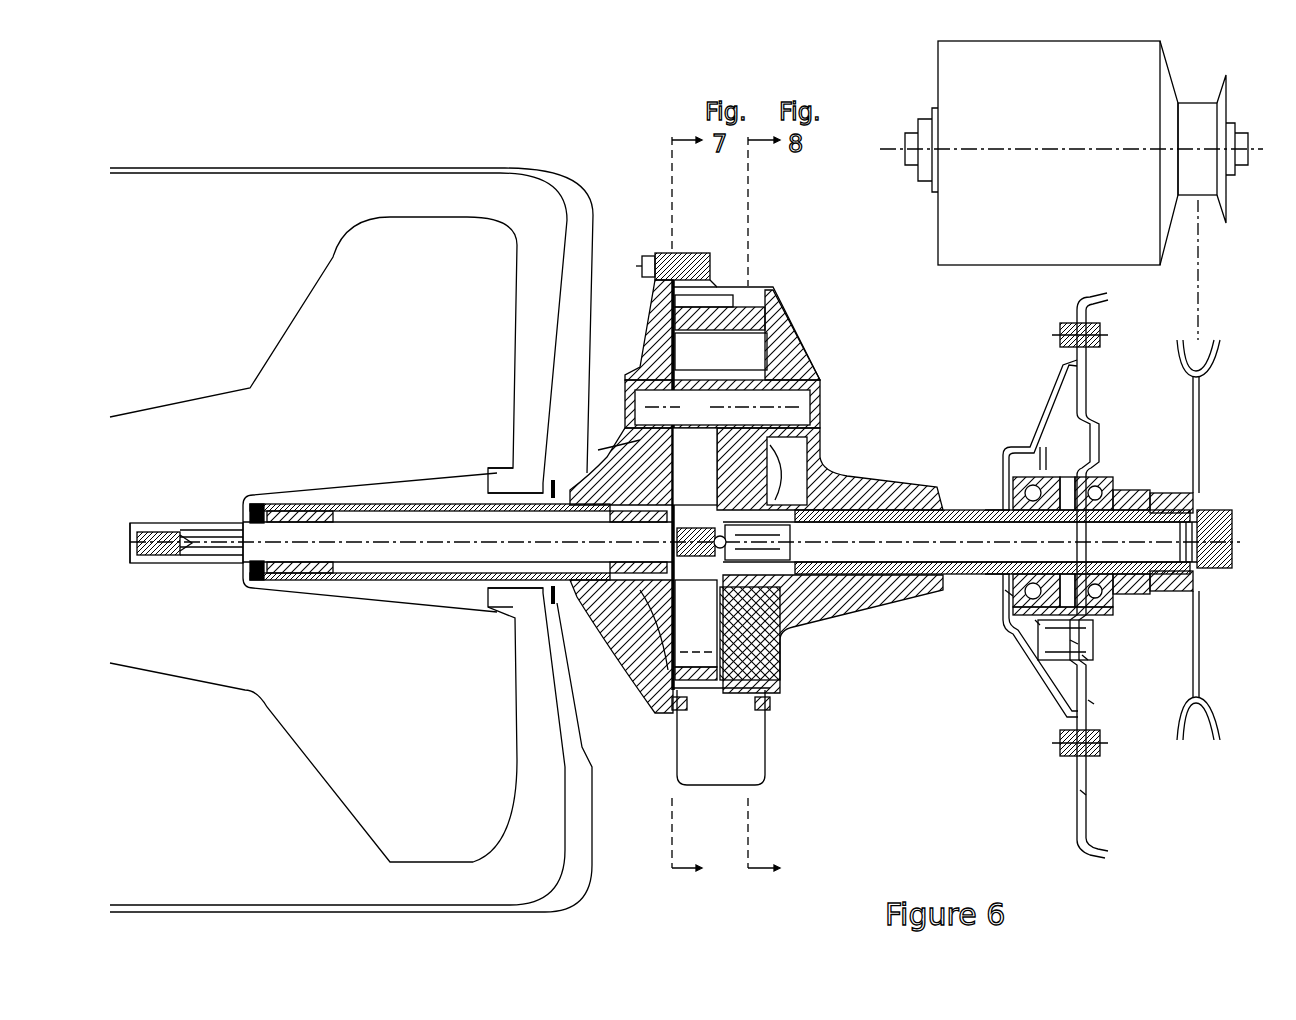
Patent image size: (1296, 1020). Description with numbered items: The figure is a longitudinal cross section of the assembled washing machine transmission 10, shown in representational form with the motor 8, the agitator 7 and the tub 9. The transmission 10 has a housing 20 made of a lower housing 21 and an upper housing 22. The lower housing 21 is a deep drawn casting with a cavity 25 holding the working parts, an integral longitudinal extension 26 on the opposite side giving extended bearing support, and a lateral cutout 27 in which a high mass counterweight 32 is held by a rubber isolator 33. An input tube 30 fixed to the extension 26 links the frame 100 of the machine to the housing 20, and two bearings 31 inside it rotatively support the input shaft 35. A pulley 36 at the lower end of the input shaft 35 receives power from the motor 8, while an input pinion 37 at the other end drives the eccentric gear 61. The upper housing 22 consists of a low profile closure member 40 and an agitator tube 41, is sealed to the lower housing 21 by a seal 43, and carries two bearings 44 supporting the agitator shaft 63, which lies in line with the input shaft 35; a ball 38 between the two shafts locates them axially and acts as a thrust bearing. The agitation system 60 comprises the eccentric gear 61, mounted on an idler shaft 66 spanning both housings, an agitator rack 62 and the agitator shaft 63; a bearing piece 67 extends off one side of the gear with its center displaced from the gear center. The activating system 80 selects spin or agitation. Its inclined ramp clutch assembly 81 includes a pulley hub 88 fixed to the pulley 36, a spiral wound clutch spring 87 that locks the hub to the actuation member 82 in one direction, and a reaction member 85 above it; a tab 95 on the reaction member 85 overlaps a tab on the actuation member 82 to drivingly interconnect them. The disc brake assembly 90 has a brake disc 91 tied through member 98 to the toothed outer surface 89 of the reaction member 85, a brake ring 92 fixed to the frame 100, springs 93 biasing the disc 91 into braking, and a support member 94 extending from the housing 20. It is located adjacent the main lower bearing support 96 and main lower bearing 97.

The agitator 7 is at (515, 302).
The motor 8 is at (1056, 224).
The tub 9 is at (543, 187).
The transmission 10 is at (804, 223).
The housing 20 is at (795, 297).
The lower housing 21 is at (765, 645).
The upper housing 22 is at (633, 667).
The cavity 25 is at (718, 298).
The longitudinal extension 26 is at (862, 490).
The lateral cutout 27 is at (778, 706).
The input tube 30 is at (985, 505).
The bearings 31 is at (818, 522).
The counterweight 32 is at (731, 757).
The rubber isolator 33 is at (676, 715).
The input shaft 35 is at (974, 555).
The pulley 36 is at (1200, 413).
The input pinion 37 is at (785, 612).
The ball 38 is at (696, 630).
The closure member 40 is at (600, 465).
The agitator tube 41 is at (418, 498).
The seal 43 is at (672, 257).
The bearings 44 is at (620, 522).
The agitation system 60 is at (633, 437).
The eccentric gear 61 is at (745, 370).
The agitator rack 62 is at (707, 467).
The agitator shaft 63 is at (479, 555).
The idler shaft 66 is at (707, 417).
The bearing piece 67 is at (673, 347).
The activating system 80 is at (1022, 398).
The inclined ramp clutch assembly 81 is at (1110, 612).
The actuation member 82 is at (1100, 478).
The reaction member 85 is at (1090, 475).
The clutch spring 87 is at (1133, 488).
The pulley hub 88 is at (1195, 495).
The toothed outer surface 89 is at (1042, 468).
The disc brake assembly 90 is at (1110, 377).
The brake disc 91 is at (1075, 380).
The brake ring 92 is at (1090, 692).
The spring 93 is at (1075, 645).
The support member 94 is at (1040, 622).
The tab 95 is at (1075, 642).
The main lower bearing support 96 is at (1085, 655).
The main lower bearing 97 is at (1007, 598).
The member 98 is at (1090, 700).
The frame 100 is at (1082, 790).